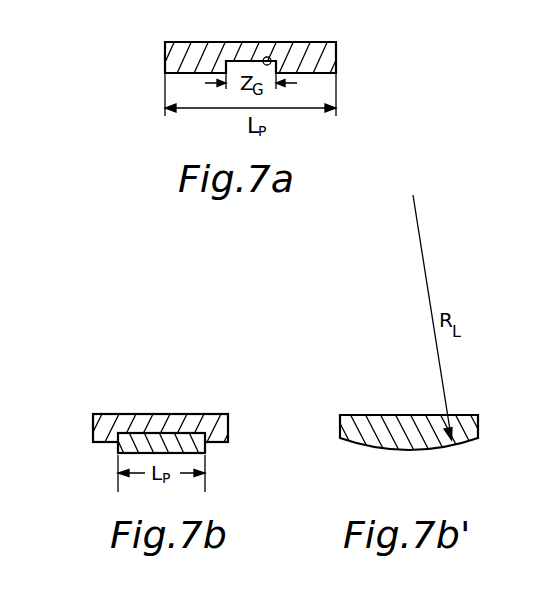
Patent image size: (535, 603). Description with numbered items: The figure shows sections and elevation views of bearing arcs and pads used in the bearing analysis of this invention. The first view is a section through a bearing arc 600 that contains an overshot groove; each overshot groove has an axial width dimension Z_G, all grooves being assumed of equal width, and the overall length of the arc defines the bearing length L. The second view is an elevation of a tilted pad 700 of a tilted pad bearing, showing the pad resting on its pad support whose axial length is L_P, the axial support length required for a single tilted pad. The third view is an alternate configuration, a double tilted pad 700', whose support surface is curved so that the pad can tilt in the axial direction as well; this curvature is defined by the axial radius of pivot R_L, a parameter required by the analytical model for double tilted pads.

In FIG. 7A, the groove in plate 600 is at (267, 57).
In FIG. 7B, the plate with layer 700 is at (163, 413).
In FIG. 7B', the curved plate 700' is at (413, 413).